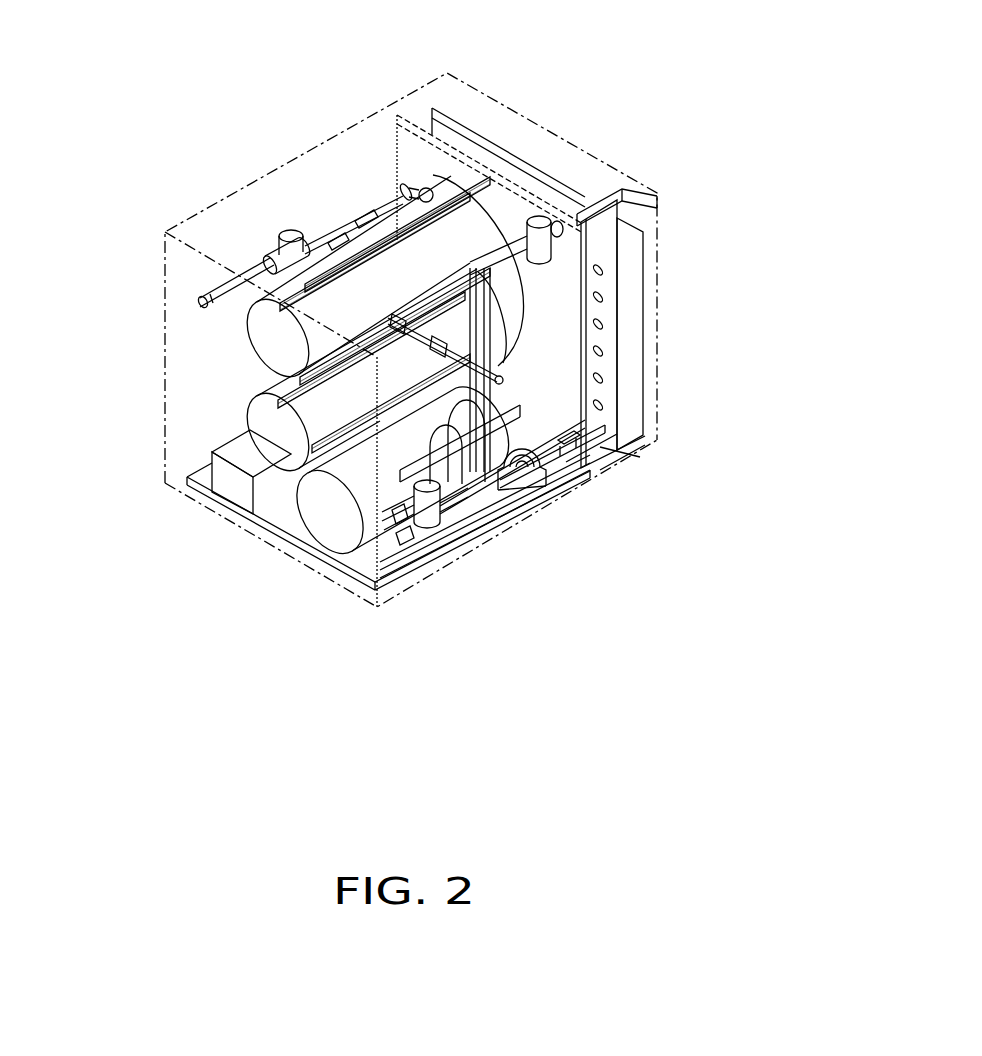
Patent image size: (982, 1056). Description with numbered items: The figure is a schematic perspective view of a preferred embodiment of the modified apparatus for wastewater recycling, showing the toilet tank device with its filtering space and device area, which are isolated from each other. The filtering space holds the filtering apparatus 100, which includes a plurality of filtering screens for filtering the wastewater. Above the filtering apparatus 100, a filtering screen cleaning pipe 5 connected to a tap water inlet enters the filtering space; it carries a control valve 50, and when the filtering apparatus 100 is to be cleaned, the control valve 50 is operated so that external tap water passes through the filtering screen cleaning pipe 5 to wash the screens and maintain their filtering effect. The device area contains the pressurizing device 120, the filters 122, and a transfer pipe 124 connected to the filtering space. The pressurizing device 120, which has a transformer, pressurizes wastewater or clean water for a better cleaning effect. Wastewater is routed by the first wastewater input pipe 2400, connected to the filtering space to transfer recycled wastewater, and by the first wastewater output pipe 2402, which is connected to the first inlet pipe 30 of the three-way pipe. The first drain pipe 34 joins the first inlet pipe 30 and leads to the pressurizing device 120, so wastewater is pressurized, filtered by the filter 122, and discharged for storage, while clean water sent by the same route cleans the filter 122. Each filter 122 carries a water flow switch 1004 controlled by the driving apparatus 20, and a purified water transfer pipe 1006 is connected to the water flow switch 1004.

The filtering screen cleaning pipe 5 is at (613, 188).
The driving apparatus 20 is at (597, 477).
The first inlet pipe 30 is at (418, 545).
The first drain pipe 34 is at (467, 547).
The control valve 50 is at (536, 218).
The filtering apparatus 100 is at (638, 452).
The pressurizing device 120 is at (325, 540).
The filter 122 is at (276, 333).
The transfer pipe 124 is at (647, 447).
The water flow switch 1004 is at (288, 228).
The purified water transfer pipe 1006 is at (363, 210).
The first wastewater input pipe 2400 is at (560, 500).
The first wastewater output pipe 2402 is at (527, 483).